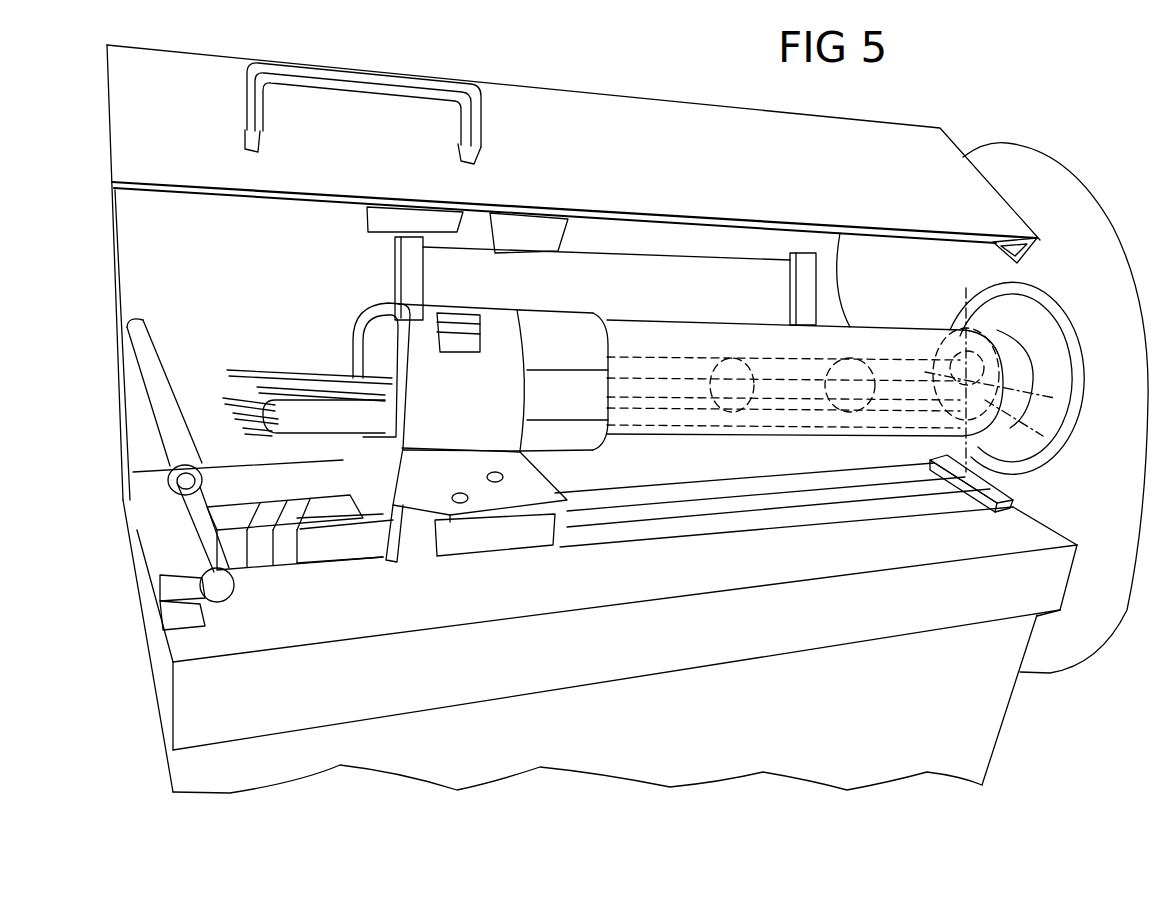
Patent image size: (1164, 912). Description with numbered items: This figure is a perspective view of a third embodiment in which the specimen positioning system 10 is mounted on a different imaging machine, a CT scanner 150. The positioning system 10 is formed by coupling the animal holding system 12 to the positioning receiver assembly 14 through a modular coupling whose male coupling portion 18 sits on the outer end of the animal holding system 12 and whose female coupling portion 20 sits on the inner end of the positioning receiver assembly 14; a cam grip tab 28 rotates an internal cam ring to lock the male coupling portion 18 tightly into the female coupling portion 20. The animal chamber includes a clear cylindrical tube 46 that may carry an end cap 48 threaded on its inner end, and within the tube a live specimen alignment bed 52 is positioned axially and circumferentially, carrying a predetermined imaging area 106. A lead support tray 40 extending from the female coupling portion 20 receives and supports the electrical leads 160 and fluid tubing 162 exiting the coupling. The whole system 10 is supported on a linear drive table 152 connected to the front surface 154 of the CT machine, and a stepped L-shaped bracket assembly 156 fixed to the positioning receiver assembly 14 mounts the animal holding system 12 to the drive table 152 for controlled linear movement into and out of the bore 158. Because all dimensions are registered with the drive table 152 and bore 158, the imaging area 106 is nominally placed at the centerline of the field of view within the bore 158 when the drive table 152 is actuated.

The positioning system 10 is at (651, 300).
The animal holding system 12 is at (770, 316).
The positioning receiver assembly 14 is at (431, 428).
The male coupling portion 18 is at (550, 333).
The female coupling portion 20 is at (443, 378).
The cam grip tab 28 is at (445, 315).
The lead support tray 40 is at (307, 427).
The cylindrical tube 46 is at (917, 323).
The end cap 48 is at (960, 420).
The live specimen alignment bed 52 is at (793, 407).
The imaging area 106 is at (1043, 436).
The CT scanner 150 is at (1052, 154).
The linear drive table 152 is at (313, 547).
The front surface 154 is at (1062, 647).
The stepped L-shaped bracket assembly 156 is at (477, 527).
The bore 158 is at (1053, 350).
The electrical leads 160 is at (270, 385).
The fluid tubing 162 is at (225, 400).